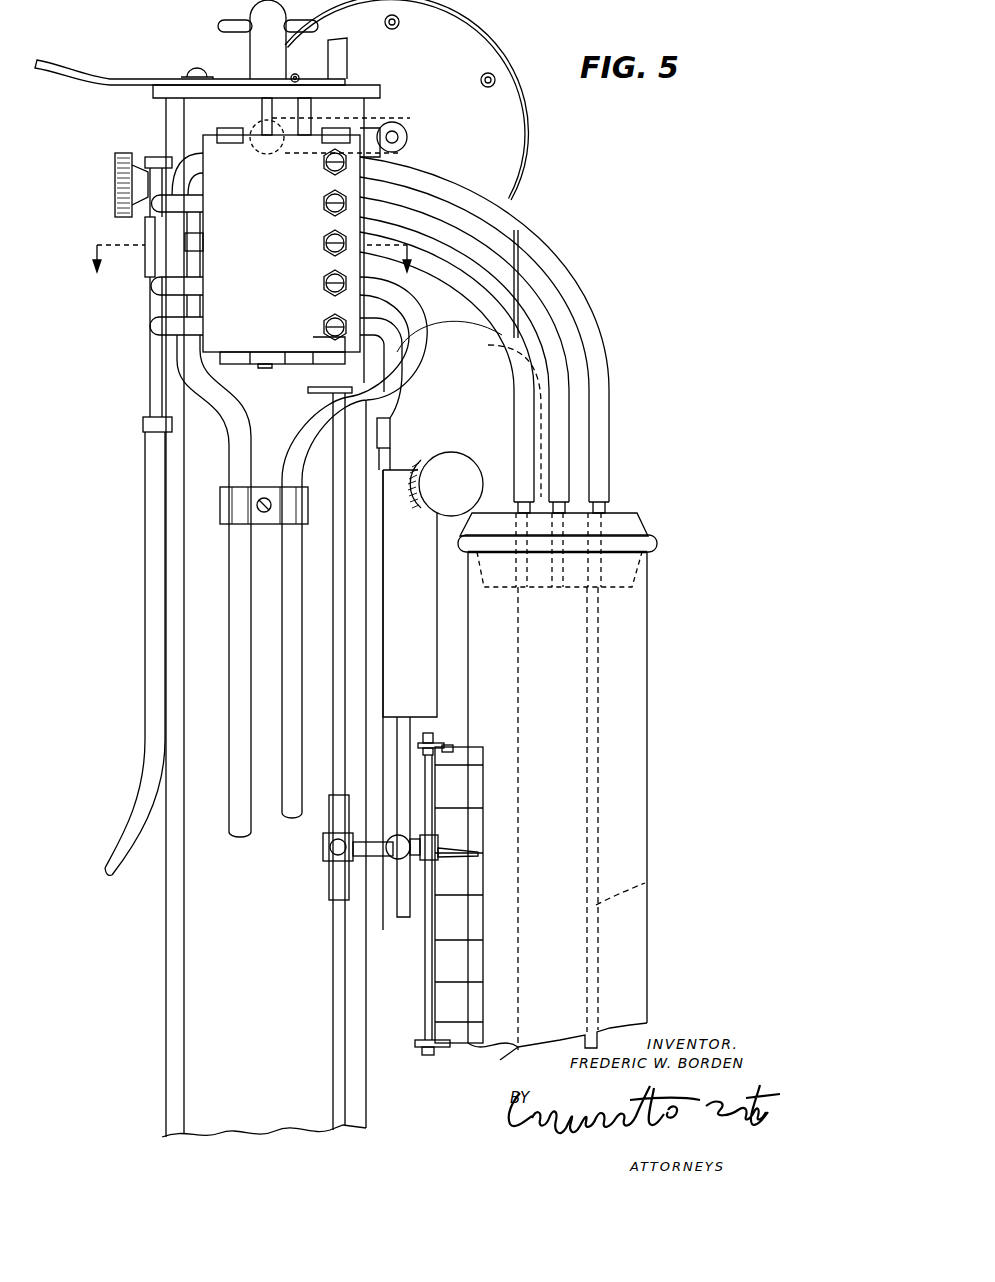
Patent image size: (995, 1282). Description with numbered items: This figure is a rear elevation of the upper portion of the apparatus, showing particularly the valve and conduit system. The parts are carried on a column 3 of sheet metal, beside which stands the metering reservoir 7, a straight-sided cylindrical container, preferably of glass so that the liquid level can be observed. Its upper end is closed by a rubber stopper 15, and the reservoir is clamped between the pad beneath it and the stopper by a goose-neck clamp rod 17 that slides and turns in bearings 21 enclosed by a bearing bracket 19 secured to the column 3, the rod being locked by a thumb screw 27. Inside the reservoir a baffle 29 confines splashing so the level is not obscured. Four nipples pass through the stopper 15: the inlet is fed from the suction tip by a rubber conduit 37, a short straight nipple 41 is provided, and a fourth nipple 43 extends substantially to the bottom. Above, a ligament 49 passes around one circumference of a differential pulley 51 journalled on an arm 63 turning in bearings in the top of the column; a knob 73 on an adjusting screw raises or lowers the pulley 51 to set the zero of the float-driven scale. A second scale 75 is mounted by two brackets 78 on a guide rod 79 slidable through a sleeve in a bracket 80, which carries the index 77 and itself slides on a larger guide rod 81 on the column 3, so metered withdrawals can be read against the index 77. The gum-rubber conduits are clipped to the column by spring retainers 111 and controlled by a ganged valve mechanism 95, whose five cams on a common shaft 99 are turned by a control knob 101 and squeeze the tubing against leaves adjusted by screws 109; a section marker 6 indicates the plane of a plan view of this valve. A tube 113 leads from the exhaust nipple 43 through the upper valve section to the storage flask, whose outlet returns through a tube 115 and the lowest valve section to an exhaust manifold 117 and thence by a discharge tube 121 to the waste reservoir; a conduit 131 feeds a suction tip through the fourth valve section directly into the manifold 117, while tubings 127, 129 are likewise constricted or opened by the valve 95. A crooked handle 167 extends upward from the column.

The column 3 is at (164, 968).
The section line 6- 6 is at (256, 251).
The metering reservoir 7 is at (647, 752).
The stopper 15 is at (640, 510).
The goose-neck clamp rod 17 is at (488, 346).
The bearing bracket 19 is at (416, 661).
The bearings 21 is at (398, 488).
The thumb screw 27 is at (462, 458).
The baffle 29 is at (500, 1055).
The rubber conduit 37 is at (452, 322).
The third nipple 41 is at (518, 508).
The fourth nipple 43 is at (647, 884).
The ligament 49 is at (525, 243).
The pulley 51 is at (528, 132).
The arm 63 is at (384, 122).
The knob 73 is at (115, 163).
The scale 75 is at (482, 790).
The index 77 is at (460, 850).
The brackets 78 is at (434, 740).
The guide rod 79 is at (425, 1012).
The bracket 80 is at (368, 855).
The guide rod 81 is at (345, 612).
The ganged valve mechanism 95 is at (278, 207).
The common shaft 99 is at (264, 112).
The control knob 101 is at (252, 50).
The screw 109 is at (324, 164).
The spring retainers 111 is at (390, 432).
The tube 113 is at (225, 407).
The tube 115 is at (395, 373).
The exhaust manifold 117 is at (150, 380).
The discharge tube 121 is at (145, 741).
The tubing 127 is at (560, 335).
The tubing 129 is at (560, 432).
The conduit 131 is at (405, 308).
The handle 167 is at (348, 70).